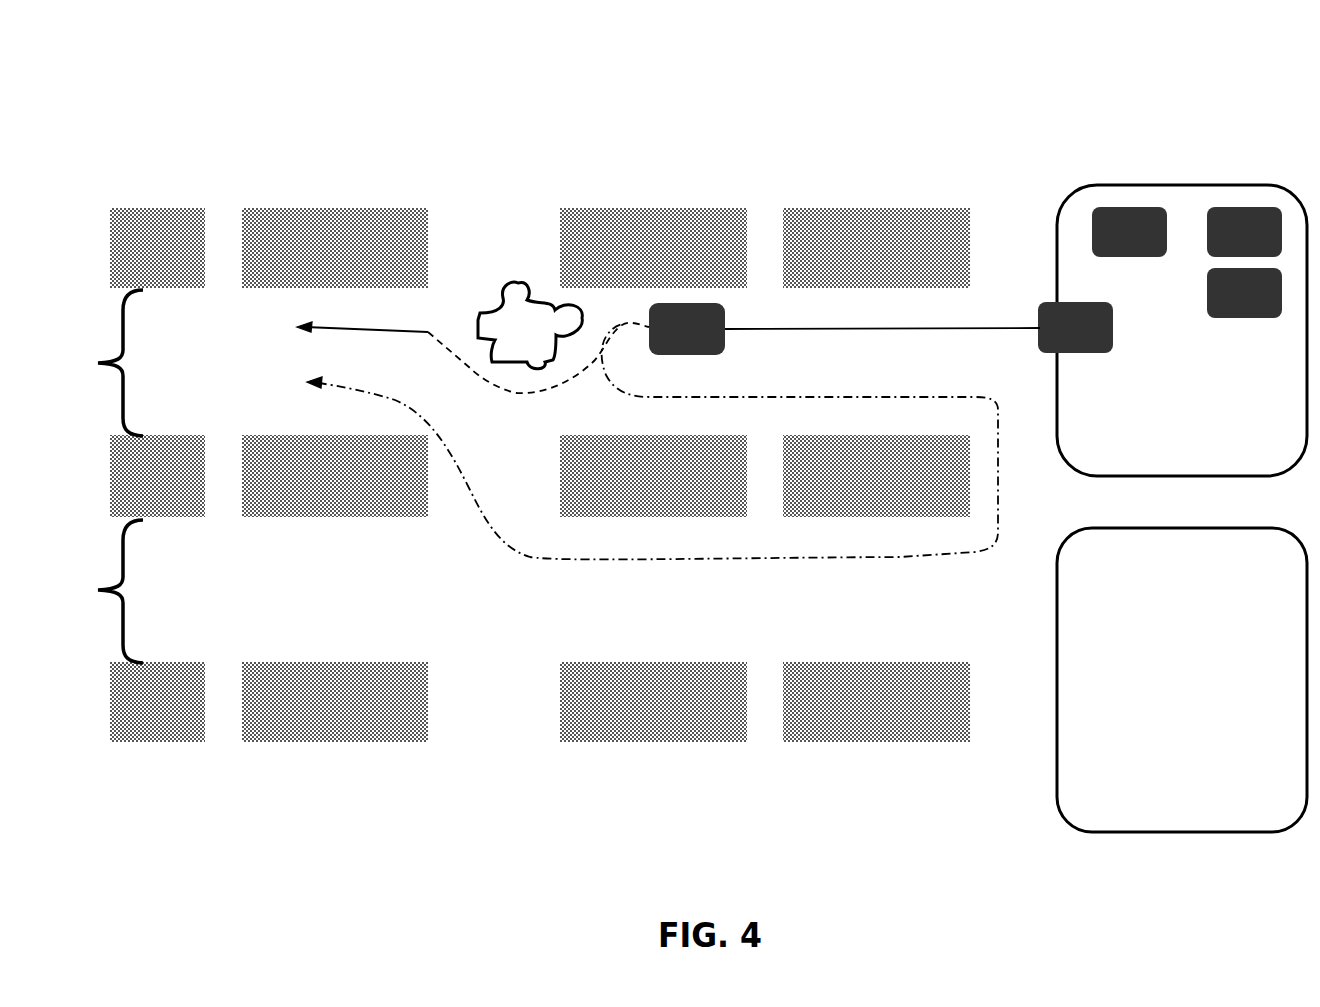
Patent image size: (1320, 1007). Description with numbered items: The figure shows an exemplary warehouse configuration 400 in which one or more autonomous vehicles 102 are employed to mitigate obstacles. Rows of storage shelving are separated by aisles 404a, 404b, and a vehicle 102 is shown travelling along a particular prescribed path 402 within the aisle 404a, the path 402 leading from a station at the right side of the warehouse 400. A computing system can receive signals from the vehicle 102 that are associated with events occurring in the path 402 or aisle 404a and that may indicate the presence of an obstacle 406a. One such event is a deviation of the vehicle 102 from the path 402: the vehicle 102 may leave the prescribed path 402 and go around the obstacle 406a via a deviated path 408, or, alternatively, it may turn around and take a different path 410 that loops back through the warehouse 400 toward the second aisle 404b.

The warehouse configuration 400 is at (1242, 88).
The autonomous vehicle 102 is at (687, 329).
The path 402 is at (895, 330).
The aisle 404a is at (91, 363).
The aisle 404b is at (87, 591).
The obstacle 406a is at (530, 325).
The deviated path 408 is at (515, 396).
The different path 410 is at (893, 560).